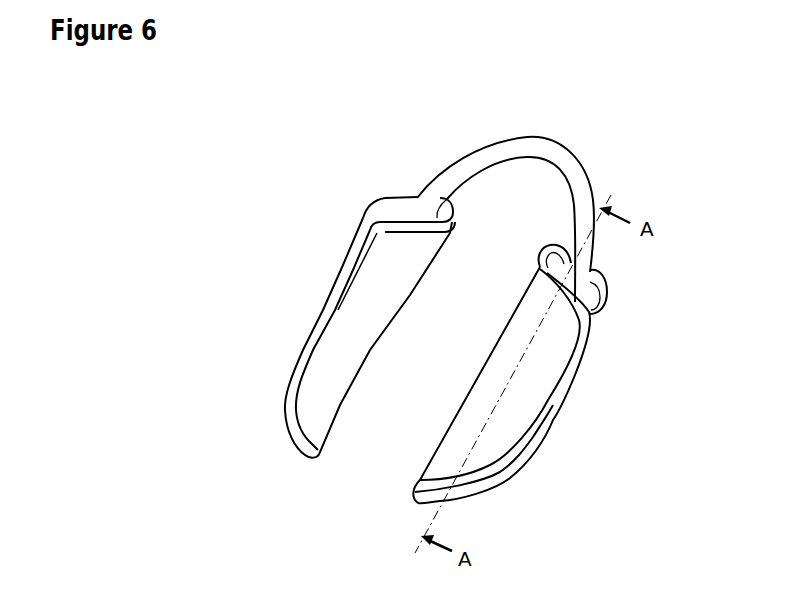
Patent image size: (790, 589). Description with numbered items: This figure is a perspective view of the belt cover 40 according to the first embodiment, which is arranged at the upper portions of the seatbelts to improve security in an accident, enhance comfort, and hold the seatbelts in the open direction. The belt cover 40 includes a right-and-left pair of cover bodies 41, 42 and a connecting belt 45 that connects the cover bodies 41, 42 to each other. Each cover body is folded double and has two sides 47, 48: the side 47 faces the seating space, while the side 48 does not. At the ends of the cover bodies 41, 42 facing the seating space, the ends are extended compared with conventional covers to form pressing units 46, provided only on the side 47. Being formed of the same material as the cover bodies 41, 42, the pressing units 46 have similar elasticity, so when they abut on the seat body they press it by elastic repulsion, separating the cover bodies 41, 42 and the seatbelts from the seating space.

The belt cover 40 is at (632, 129).
The cover body 41 is at (517, 420).
The cover body 42 is at (350, 290).
The connecting belt 45 is at (517, 135).
The pressing unit 46 is at (392, 197).
The side 47 is at (375, 207).
The side 48 is at (330, 355).